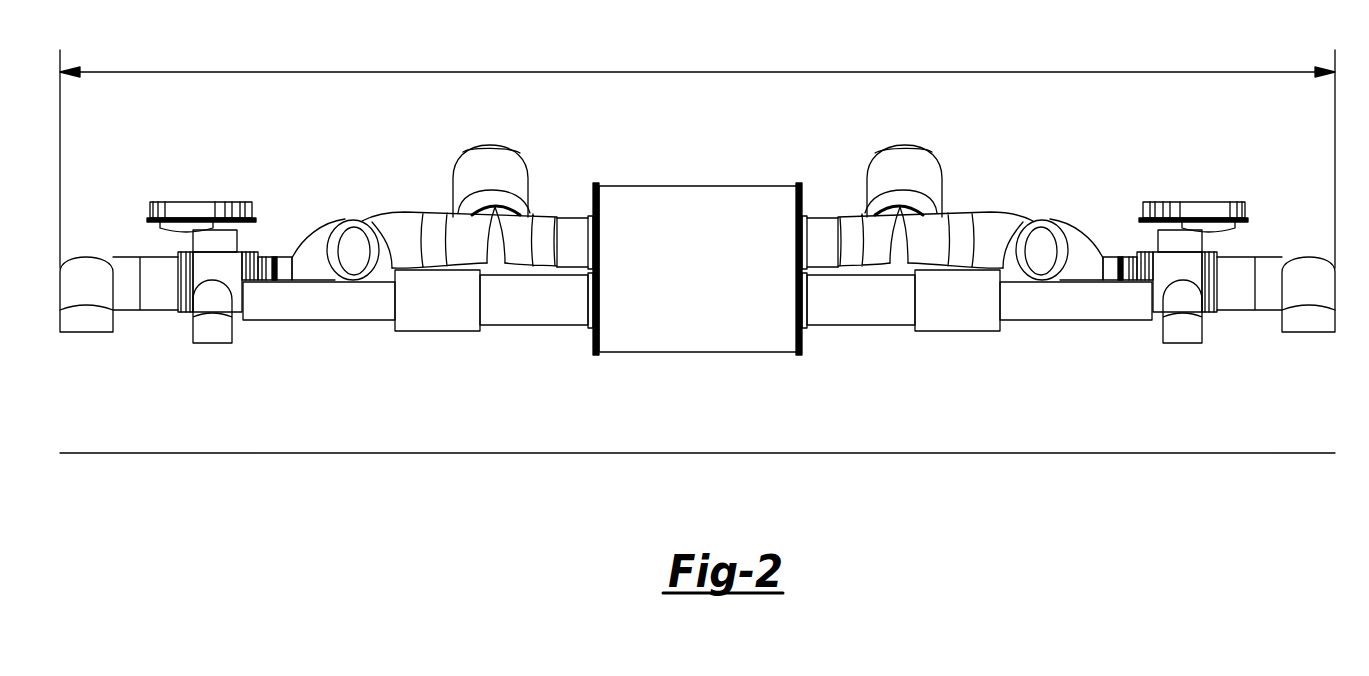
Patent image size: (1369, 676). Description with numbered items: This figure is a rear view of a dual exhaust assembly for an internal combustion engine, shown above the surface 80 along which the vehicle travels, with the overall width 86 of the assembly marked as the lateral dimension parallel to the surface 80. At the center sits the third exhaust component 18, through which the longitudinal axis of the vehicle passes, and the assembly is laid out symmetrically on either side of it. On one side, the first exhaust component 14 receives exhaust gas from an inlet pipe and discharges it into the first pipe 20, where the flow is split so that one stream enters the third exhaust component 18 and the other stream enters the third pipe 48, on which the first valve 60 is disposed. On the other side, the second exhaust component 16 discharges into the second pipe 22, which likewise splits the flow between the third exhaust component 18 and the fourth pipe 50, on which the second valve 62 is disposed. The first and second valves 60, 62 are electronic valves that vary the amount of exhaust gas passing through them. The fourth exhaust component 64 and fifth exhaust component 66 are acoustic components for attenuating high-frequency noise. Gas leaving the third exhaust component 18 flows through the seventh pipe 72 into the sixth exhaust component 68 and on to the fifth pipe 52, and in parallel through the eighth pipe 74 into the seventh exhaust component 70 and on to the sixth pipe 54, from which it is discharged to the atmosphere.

The first exhaust component 14 is at (928, 177).
The second exhaust component 16 is at (508, 183).
The third exhaust component 18 is at (690, 207).
The first pipe 20 is at (825, 232).
The second pipe 22 is at (432, 227).
The third pipe 48 is at (1325, 287).
The fourth pipe 50 is at (70, 292).
The fifth pipe 52 is at (1188, 308).
The sixth pipe 54 is at (210, 309).
The first valve 60 is at (1205, 210).
The second valve 62 is at (190, 210).
The fourth exhaust component 64 is at (1087, 247).
The fifth exhaust component 66 is at (315, 247).
The sixth exhaust component 68 is at (942, 320).
The seventh exhaust component 70 is at (420, 320).
The seventh pipe 72 is at (857, 317).
The eighth pipe 74 is at (538, 317).
The surface 80 is at (710, 452).
The width 86 is at (708, 72).